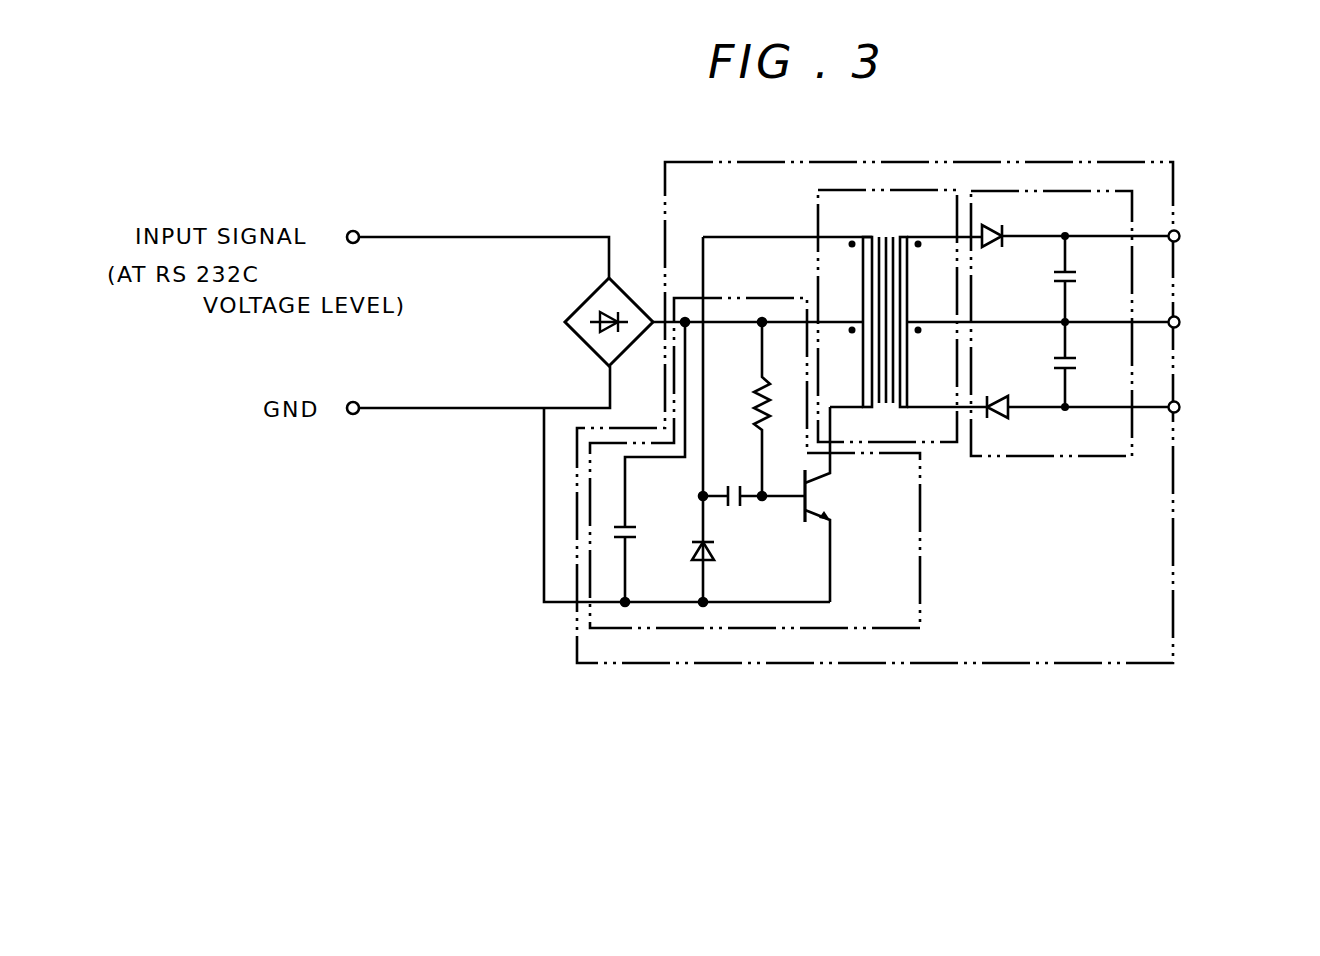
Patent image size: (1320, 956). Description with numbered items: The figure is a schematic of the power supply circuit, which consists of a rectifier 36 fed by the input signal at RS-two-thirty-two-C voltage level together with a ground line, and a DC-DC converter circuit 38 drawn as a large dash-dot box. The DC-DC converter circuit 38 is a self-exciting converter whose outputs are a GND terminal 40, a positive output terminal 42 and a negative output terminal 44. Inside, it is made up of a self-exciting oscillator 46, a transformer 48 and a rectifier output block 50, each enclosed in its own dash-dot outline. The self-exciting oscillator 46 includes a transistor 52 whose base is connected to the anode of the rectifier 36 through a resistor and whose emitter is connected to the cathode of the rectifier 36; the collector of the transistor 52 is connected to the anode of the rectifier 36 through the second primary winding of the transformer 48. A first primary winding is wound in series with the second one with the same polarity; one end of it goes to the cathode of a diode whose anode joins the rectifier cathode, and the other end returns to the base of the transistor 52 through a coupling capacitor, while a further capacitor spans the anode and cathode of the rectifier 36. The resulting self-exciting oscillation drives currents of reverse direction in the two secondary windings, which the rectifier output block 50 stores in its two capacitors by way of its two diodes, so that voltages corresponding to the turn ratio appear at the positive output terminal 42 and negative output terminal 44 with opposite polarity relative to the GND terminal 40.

The rectifier 36 is at (584, 306).
The DC-DC converter circuit 38 is at (847, 663).
The GND terminal 40 is at (1248, 337).
The positive output terminal 42 is at (1218, 239).
The negative output terminal 44 is at (1218, 406).
The self-exciting oscillator 46 is at (720, 297).
The transformer 48 is at (817, 222).
The rectifier output block 50 is at (1003, 457).
The transistor 52 is at (848, 513).